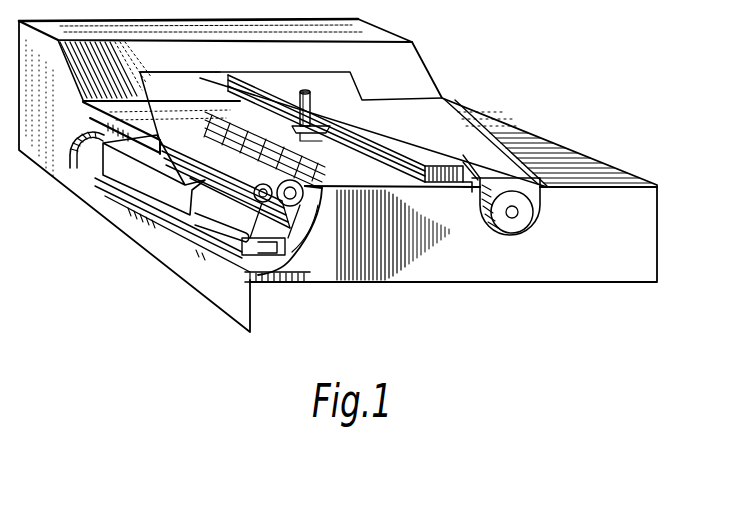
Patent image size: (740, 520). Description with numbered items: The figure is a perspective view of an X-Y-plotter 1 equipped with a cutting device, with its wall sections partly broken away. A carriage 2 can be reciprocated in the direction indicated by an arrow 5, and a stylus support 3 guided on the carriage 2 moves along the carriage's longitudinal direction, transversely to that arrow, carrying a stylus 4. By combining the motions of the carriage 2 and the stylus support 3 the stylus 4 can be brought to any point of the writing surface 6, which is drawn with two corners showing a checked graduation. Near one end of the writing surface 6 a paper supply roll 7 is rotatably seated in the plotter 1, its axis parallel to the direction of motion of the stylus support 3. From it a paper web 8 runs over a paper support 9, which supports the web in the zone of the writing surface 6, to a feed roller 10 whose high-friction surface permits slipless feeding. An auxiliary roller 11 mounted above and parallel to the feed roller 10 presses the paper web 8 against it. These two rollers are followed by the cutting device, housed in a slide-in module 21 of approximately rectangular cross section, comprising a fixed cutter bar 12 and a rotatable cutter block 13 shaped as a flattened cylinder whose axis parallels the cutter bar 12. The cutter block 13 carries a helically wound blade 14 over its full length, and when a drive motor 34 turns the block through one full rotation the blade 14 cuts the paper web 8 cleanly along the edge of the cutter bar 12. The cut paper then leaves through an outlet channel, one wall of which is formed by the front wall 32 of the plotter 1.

The X-Y-plotter 1 is at (448, 40).
The carriage 2 is at (362, 127).
The stylus support 3 is at (323, 123).
The stylus 4 is at (305, 92).
The arrow 5 is at (267, 142).
The writing surface 6 is at (387, 127).
The paper supply roll 7 is at (486, 226).
The paper web 8 is at (147, 250).
The paper support 9 is at (470, 190).
The feed roller 10 is at (330, 225).
The auxiliary roller 11 is at (188, 150).
The cutter bar 12 is at (272, 243).
The cutter block 13 is at (227, 260).
The blade 14 is at (192, 223).
The slide-in module 21 is at (120, 180).
The front wall 32 is at (125, 208).
The drive motor 34 is at (80, 178).